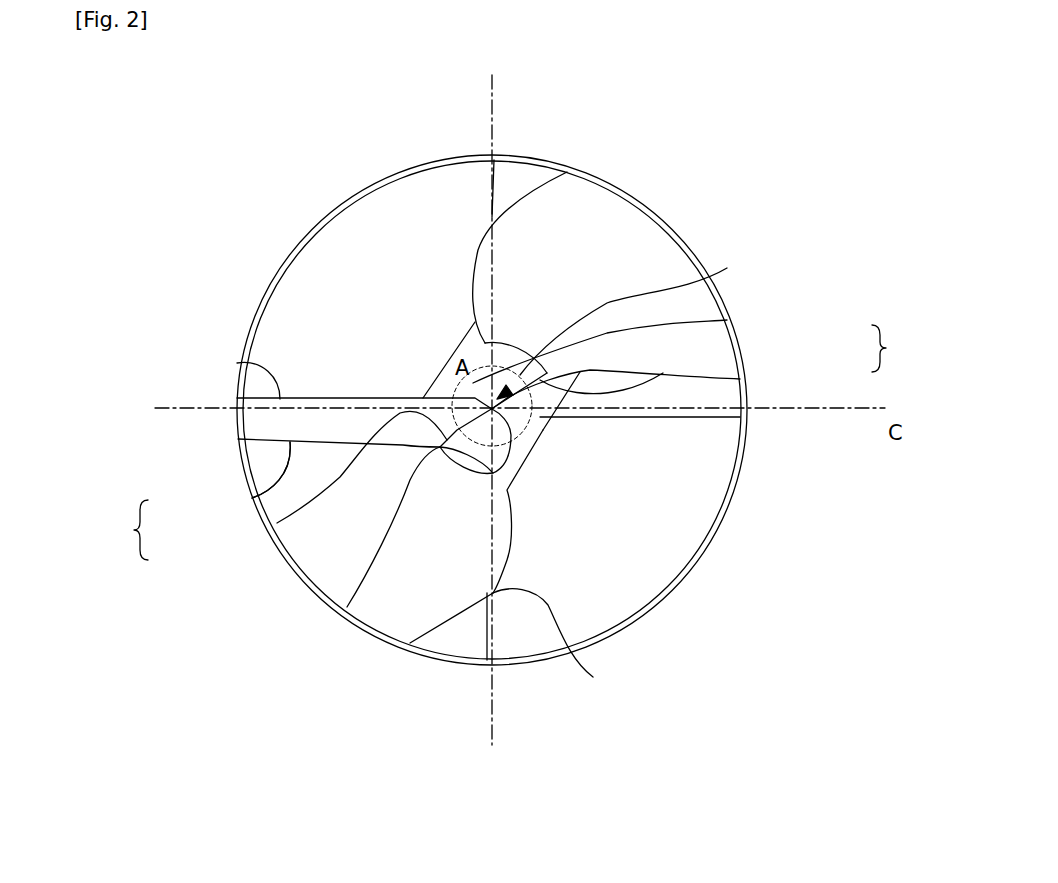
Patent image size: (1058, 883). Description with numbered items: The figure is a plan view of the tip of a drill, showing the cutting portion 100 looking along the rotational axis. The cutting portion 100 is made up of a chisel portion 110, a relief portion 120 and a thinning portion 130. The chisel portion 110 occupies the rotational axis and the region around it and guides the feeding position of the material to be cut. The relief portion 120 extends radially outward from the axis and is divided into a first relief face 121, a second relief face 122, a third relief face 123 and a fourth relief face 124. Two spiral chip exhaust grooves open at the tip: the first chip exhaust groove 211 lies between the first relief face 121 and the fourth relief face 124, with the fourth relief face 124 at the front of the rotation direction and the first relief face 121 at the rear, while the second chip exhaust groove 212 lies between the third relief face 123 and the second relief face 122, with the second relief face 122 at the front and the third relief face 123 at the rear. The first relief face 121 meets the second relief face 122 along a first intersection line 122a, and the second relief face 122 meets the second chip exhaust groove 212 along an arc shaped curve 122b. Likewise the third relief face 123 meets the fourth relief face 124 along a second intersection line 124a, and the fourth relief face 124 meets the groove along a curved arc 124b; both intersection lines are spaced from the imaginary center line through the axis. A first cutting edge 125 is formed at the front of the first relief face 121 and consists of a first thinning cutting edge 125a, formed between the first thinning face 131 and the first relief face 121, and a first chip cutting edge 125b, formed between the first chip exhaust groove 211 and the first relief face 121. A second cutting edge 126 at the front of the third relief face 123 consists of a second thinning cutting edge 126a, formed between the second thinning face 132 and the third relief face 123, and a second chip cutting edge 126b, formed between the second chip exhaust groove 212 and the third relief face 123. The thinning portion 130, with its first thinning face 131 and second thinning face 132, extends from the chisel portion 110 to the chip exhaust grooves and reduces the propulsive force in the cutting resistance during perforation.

The cutting portion 100 is at (318, 165).
The chisel portion 110 is at (727, 320).
The relief portion 120 is at (661, 543).
The first relief face 121 is at (257, 427).
The second relief face 122 is at (293, 300).
The first intersection line 122a is at (237, 363).
The arc shaped curve 122b is at (533, 190).
The third relief face 123 is at (717, 372).
The fourth relief face 124 is at (713, 492).
The second intersection line 124a is at (683, 417).
The curved arc 124b is at (593, 677).
The first cutting edge 125 is at (124, 530).
The first thinning cutting edge 125a is at (277, 523).
The first chip cutting edge 125b is at (252, 498).
The second cutting edge 126 is at (899, 348).
The second thinning cutting edge 126a is at (667, 373).
The second chip cutting edge 126b is at (717, 400).
The thinning portion 130 is at (467, 478).
The first thinning face 131 is at (347, 607).
The second thinning face 132 is at (727, 268).
The first chip exhaust groove 211 is at (330, 533).
The second chip exhaust groove 212 is at (615, 237).